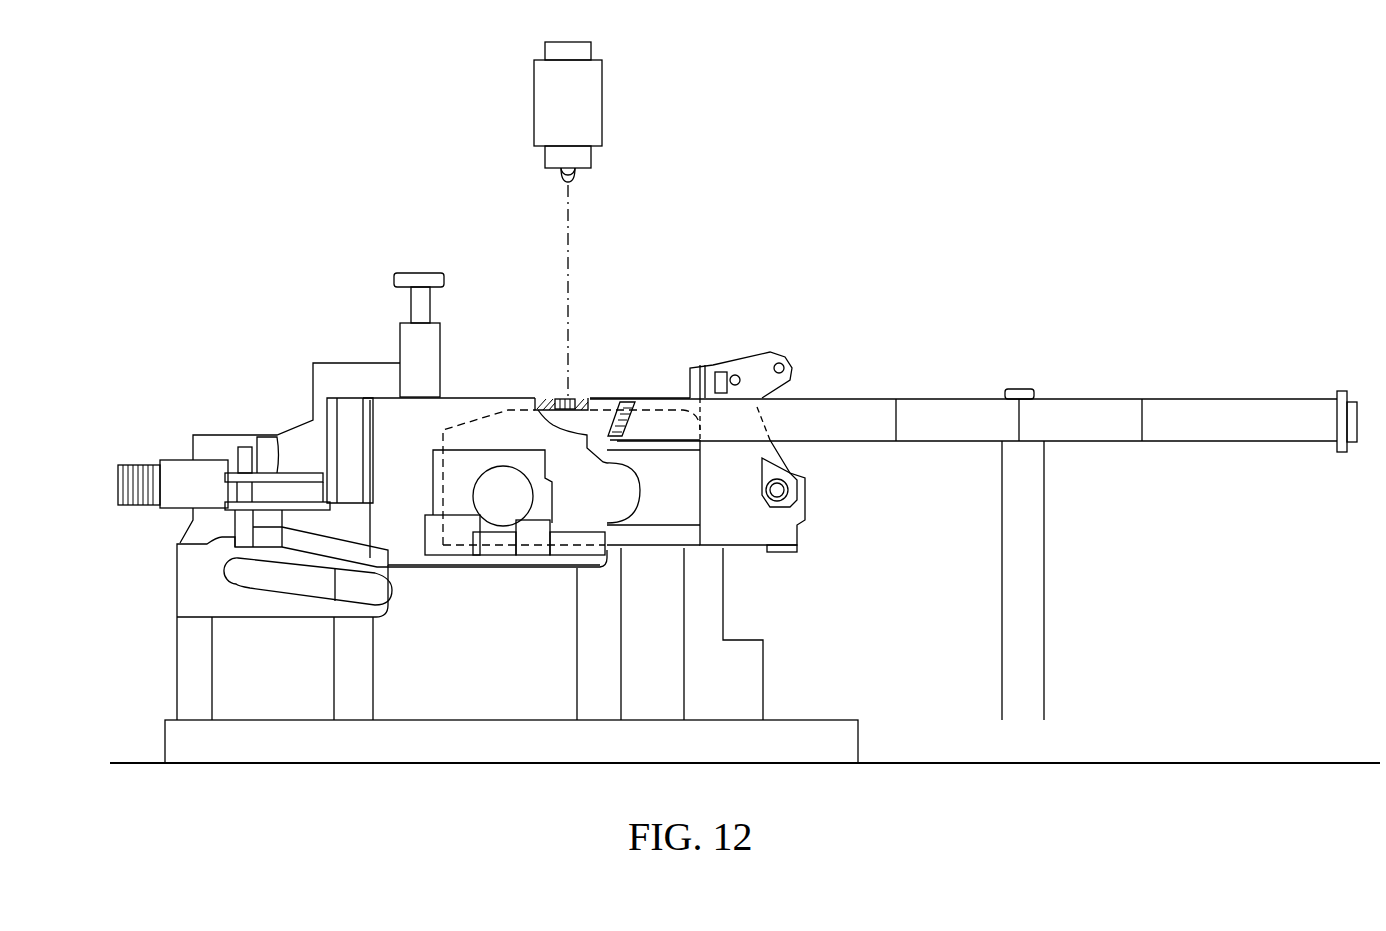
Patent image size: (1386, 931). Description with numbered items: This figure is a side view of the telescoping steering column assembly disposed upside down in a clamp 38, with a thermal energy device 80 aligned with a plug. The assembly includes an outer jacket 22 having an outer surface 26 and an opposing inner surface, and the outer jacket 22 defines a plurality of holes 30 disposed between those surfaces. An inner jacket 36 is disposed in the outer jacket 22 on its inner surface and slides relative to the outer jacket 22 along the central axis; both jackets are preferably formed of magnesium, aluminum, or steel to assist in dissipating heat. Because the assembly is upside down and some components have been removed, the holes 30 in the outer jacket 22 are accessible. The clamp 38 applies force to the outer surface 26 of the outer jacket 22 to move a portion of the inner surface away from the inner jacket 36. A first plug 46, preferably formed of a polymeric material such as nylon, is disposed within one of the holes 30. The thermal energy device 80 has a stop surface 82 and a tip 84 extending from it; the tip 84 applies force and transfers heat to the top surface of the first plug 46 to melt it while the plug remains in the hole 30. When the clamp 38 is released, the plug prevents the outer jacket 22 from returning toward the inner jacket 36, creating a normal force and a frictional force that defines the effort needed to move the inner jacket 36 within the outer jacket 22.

The outer jacket 22 is at (486, 404).
The outer surface 26 is at (520, 402).
The holes 30 is at (557, 402).
The inner jacket 36 is at (603, 422).
The clamp 38 is at (1136, 400).
The first plug 46 is at (573, 400).
The thermal energy device 80 is at (593, 94).
The stop surface 82 is at (584, 170).
The tip 84 is at (562, 175).